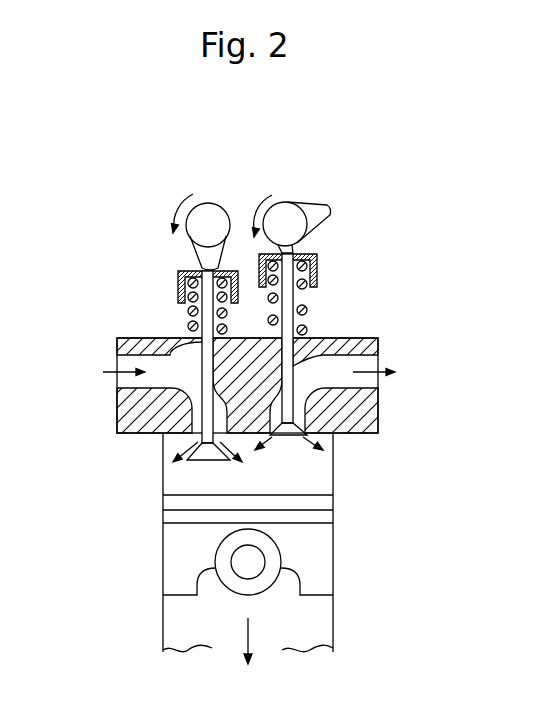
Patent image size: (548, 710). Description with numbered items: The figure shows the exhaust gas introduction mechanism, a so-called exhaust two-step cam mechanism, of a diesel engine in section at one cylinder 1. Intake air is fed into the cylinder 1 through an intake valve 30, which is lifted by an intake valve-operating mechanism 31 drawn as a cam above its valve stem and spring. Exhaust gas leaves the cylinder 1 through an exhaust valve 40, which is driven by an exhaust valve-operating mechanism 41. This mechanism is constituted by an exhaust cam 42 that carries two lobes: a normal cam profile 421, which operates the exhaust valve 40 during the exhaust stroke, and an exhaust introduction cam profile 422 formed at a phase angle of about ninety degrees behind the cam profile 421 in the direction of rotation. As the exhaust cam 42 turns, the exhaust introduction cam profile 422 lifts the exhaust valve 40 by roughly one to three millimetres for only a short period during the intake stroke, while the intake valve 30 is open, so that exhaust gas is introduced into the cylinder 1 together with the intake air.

The cylinder 1 is at (313, 477).
The intake valve 30 is at (205, 318).
The intake valve-operating mechanism 31 is at (213, 196).
The exhaust valve 40 is at (290, 298).
The exhaust valve-operating mechanism 41 is at (347, 184).
The exhaust cam 42 is at (288, 195).
The normal cam profile 421 is at (327, 215).
The exhaust introduction cam profile 422 is at (300, 250).